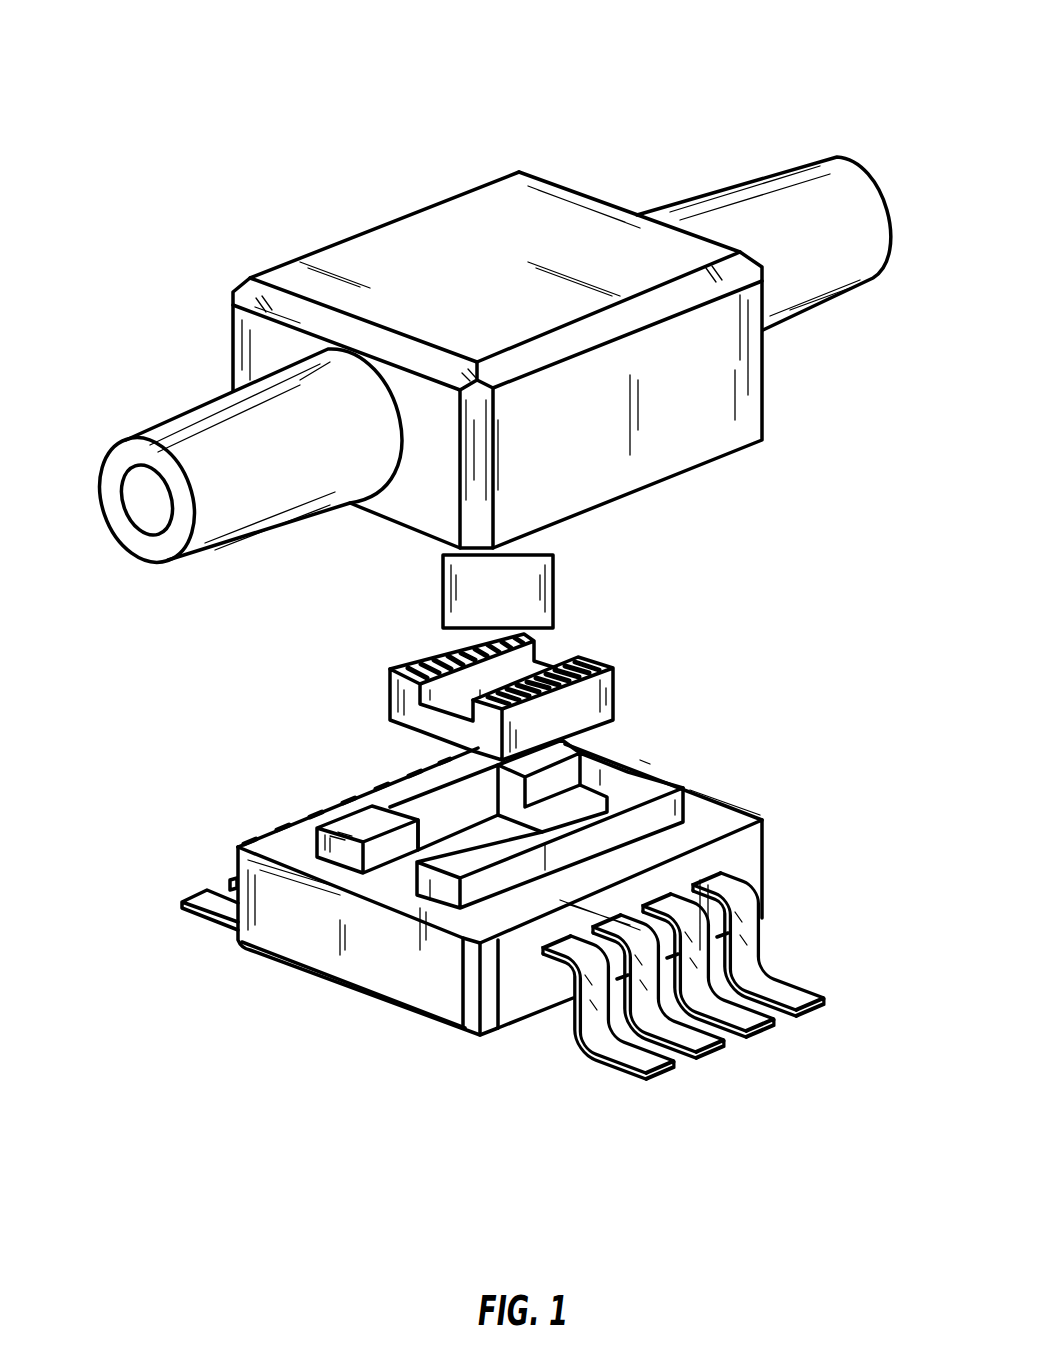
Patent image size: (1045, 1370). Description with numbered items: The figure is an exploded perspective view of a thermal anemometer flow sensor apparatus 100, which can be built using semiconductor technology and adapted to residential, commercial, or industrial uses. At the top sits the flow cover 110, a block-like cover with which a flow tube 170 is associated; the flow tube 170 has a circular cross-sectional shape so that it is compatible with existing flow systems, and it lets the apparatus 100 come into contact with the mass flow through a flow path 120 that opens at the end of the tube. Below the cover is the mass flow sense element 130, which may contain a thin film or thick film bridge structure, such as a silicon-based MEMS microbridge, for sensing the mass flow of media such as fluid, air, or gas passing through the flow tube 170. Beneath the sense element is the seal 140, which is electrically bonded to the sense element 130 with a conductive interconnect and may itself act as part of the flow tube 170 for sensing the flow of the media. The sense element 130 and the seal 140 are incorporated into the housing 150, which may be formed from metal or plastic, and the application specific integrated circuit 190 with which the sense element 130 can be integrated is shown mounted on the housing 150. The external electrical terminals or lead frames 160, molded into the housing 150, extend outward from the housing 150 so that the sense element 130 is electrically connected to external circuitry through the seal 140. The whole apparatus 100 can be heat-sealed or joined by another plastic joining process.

The thermal anemometer flow sensor apparatus 100 is at (211, 64).
The flow cover 110 is at (318, 250).
The flow path 120 is at (154, 506).
The mass flow sense element 130 is at (557, 592).
The seal 140 is at (613, 692).
The housing 150 is at (710, 797).
The lead frames 160 is at (797, 988).
The flow tube 170 is at (850, 163).
The application specific integrated circuit (ASIC) 190 is at (364, 815).